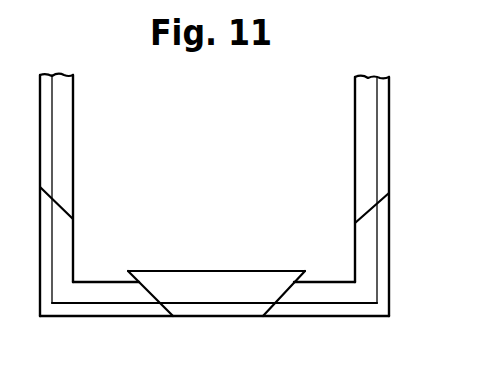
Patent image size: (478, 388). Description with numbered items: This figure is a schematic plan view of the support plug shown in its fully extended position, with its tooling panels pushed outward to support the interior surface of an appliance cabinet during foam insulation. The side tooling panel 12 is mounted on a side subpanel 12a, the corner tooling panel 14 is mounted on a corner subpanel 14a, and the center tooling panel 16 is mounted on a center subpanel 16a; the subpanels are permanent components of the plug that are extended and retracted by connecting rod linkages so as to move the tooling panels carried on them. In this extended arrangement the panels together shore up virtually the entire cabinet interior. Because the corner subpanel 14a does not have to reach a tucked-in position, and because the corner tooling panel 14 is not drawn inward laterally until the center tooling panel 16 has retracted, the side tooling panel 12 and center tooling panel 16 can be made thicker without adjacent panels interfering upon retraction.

The side tooling panel 12 is at (45, 117).
The side subpanel 12a is at (63, 168).
The corner tooling panel 14 is at (73, 310).
The corner subpanel 14a is at (74, 246).
The center tooling panel 16 is at (252, 312).
The center subpanel 16a is at (248, 285).